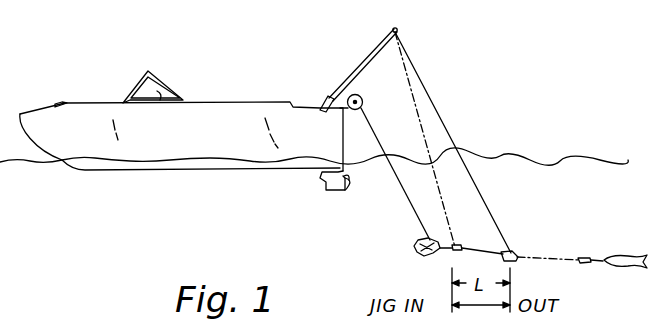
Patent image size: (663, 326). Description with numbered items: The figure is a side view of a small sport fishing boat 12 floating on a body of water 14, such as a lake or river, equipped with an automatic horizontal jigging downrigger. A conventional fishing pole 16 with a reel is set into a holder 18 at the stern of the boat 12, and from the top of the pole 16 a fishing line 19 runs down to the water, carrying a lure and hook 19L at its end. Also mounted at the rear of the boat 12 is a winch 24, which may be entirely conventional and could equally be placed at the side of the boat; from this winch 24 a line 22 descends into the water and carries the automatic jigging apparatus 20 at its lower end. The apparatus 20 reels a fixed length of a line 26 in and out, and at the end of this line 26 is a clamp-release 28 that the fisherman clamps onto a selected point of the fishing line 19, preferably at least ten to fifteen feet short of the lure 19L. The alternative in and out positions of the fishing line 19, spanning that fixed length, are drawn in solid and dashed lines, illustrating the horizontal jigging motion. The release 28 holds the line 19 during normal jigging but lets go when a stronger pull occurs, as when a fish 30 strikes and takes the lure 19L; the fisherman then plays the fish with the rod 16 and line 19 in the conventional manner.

The sport fishing boat 12 is at (220, 128).
The body of water 14 is at (532, 158).
The fishing pole 16 is at (353, 74).
The holder 18 is at (322, 101).
The fishing line 19 is at (436, 100).
The lure and hook 19L is at (586, 256).
The automatic horizontal jigging downrigger apparatus 20 is at (416, 242).
The line 22 is at (396, 182).
The winch 24 is at (363, 99).
The line 26 is at (470, 248).
The clamp-release 28 is at (512, 252).
The fish 30 is at (624, 266).